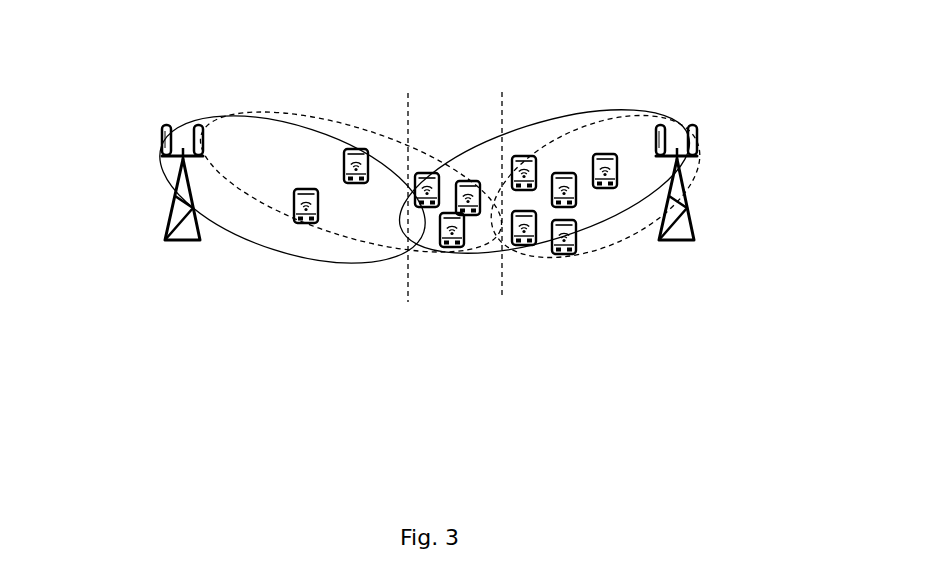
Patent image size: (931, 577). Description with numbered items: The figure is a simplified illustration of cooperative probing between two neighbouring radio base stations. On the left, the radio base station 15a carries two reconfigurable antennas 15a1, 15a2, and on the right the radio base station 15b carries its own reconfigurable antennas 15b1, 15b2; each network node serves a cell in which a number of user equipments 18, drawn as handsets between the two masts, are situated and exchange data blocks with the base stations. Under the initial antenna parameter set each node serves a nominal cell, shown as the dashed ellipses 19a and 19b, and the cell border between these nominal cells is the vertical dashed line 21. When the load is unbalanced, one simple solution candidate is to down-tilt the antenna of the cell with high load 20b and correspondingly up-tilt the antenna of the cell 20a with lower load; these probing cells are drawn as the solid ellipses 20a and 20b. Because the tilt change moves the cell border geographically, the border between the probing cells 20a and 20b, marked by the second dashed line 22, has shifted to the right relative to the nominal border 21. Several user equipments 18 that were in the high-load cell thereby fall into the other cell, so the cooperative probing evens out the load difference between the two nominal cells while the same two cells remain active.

The radio base station 15a is at (172, 220).
The reconfigurable antenna 15a1 is at (163, 129).
The reconfigurable antenna 15a2 is at (193, 131).
The radio base station 15b is at (692, 212).
The reconfigurable antenna 15b1 is at (666, 130).
The reconfigurable antenna 15b2 is at (697, 140).
The user equipment 18 is at (368, 165).
The nominal cell 19a is at (318, 136).
The nominal cell 19b is at (540, 130).
The probing cell 20a is at (303, 117).
The probing cell 20b is at (653, 114).
The cell border between nominal cells 21 is at (407, 283).
The cell border between probing cells 22 is at (503, 280).